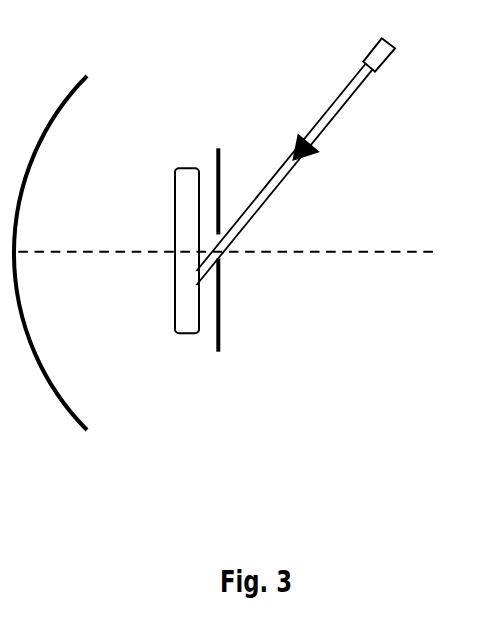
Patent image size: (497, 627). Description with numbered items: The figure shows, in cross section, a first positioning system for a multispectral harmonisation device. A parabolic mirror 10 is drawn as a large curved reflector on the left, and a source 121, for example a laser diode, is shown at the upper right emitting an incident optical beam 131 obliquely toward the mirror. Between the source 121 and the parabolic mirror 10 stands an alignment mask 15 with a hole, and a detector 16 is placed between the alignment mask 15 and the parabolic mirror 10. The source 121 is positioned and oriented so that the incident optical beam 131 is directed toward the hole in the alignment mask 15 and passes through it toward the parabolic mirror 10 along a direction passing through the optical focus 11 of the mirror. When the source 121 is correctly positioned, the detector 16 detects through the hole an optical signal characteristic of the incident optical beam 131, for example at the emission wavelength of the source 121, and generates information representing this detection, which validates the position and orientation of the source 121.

The parabolic mirror 10 is at (87, 76).
The optical focus 11 is at (222, 254).
The alignment mask 15 is at (219, 340).
The detector 16 is at (178, 322).
The source 121 is at (402, 53).
The incident optical beam 131 is at (348, 92).